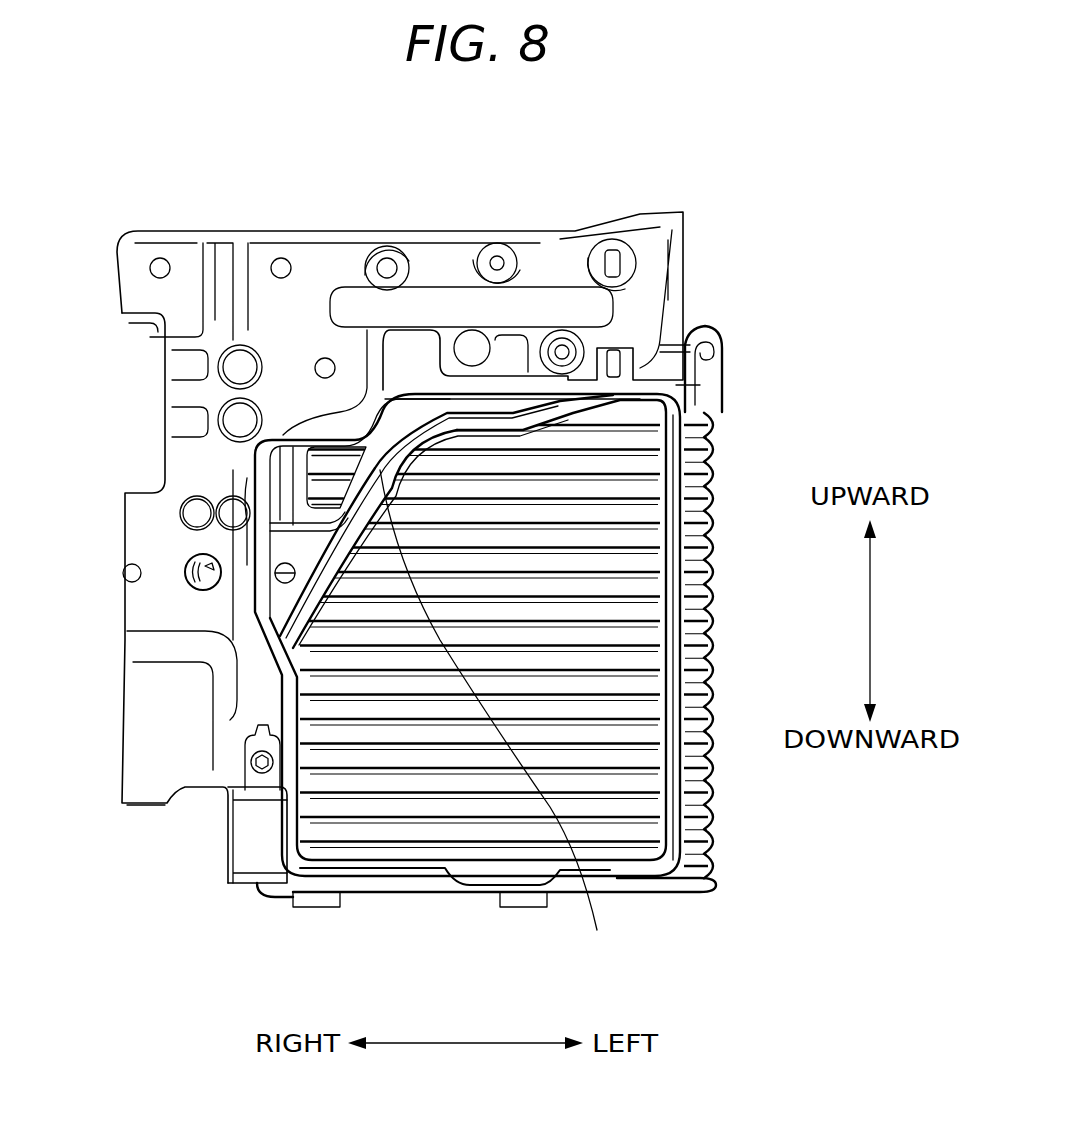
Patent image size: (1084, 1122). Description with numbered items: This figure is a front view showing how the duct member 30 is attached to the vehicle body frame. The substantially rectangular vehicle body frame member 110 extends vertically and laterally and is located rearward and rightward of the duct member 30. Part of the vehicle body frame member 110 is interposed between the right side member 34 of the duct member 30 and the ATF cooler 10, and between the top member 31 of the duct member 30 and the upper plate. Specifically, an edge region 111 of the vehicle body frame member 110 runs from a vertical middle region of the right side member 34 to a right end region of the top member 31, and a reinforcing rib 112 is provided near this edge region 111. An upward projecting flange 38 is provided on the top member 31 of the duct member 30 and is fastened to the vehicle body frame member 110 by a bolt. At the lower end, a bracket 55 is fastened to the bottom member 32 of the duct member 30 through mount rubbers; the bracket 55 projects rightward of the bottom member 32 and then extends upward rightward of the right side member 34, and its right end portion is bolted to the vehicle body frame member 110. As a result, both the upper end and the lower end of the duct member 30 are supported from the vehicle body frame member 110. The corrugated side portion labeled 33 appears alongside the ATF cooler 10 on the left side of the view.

The ATF cooler 10 is at (720, 806).
The duct member 30 is at (612, 886).
The top member 31 is at (313, 437).
The bottom member 32 is at (466, 895).
The corrugated side wall 33 is at (703, 595).
The right side member 34 is at (250, 607).
The flange 38 is at (503, 345).
The bracket 55 is at (256, 857).
The vehicle body frame member 110 is at (132, 522).
The edge region 111 is at (597, 930).
The reinforcing rib 112 is at (413, 420).